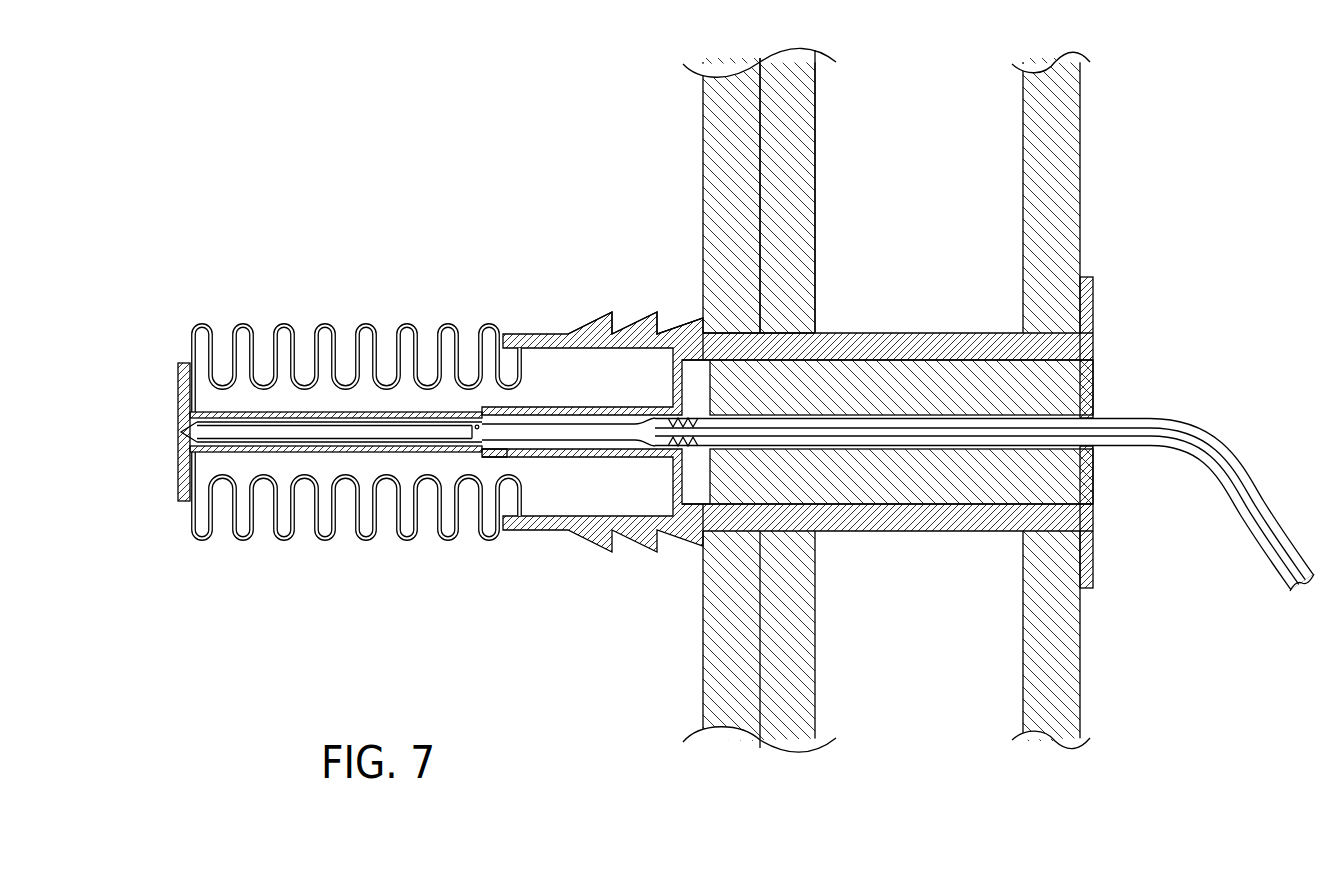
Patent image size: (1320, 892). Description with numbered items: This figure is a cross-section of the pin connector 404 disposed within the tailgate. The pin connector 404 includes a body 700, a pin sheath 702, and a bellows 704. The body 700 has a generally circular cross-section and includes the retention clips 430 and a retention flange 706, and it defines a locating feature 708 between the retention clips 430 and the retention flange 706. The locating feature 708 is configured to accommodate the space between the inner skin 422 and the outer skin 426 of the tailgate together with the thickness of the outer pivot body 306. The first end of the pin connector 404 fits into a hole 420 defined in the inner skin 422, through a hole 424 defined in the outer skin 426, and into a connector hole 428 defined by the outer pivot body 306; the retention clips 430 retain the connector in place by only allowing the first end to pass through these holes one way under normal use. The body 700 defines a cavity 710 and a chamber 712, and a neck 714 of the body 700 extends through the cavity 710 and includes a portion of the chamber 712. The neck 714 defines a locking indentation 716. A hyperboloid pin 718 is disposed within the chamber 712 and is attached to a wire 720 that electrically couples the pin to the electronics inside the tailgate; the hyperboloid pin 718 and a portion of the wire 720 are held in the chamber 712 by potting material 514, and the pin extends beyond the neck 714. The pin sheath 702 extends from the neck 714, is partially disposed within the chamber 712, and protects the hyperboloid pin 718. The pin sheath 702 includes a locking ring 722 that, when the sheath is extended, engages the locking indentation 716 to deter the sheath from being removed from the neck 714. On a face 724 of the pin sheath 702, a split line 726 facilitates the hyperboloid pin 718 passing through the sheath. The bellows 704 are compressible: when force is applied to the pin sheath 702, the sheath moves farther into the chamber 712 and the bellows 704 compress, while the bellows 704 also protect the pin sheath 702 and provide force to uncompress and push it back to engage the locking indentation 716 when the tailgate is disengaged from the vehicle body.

The pin connector 404 is at (350, 130).
The outer pivot body 306 is at (703, 148).
The outer skin 426 is at (815, 141).
The hole 424 is at (805, 328).
The inner skin 422 is at (1023, 205).
The hole 420 is at (1100, 331).
The potting material 514 is at (1100, 472).
The retention flange 706 is at (1100, 277).
The locating feature 708 is at (1087, 766).
The body 700 is at (522, 333).
The retention clips 430 is at (598, 318).
The connector hole 428 is at (690, 320).
The cavity 710 is at (552, 500).
The chamber 712 is at (693, 490).
The pin sheath 702 is at (178, 372).
The bellows 704 is at (283, 323).
The face 724 is at (176, 400).
The split line 726 is at (180, 432).
The wire 720 is at (1140, 418).
The hyperboloid pin 718 is at (576, 428).
The locking indentation 716 is at (497, 403).
The neck 714 is at (483, 408).
The locking ring 722 is at (487, 441).